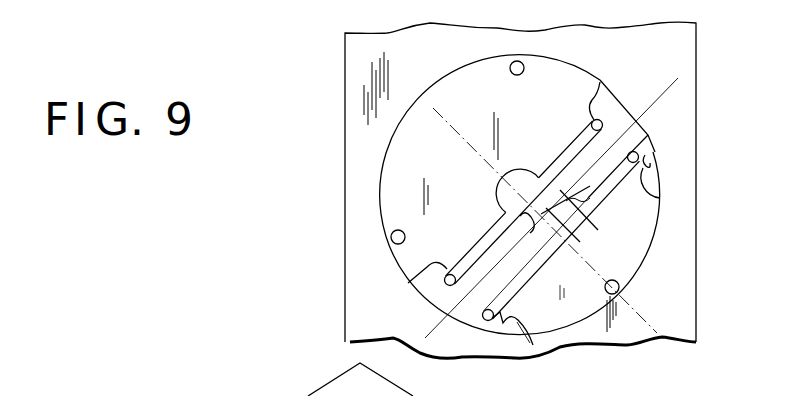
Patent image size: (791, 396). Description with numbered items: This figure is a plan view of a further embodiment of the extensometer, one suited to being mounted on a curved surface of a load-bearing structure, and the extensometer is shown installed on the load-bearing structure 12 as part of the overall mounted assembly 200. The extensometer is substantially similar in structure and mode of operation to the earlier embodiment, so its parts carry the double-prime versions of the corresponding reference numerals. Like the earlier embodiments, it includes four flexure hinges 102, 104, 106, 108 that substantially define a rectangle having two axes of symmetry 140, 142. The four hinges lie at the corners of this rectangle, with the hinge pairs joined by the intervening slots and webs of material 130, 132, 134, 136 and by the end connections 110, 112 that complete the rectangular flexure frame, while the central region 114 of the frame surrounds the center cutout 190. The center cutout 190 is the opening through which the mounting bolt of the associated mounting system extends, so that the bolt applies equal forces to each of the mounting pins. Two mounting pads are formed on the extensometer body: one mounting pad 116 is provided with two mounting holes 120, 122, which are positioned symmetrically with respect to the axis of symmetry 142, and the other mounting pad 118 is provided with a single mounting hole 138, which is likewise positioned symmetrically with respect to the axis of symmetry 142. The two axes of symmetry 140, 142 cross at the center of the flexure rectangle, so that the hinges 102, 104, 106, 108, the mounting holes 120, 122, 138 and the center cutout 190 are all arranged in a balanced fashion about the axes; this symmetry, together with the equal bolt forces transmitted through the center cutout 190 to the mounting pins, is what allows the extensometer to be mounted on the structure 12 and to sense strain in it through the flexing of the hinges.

The mounting plate 12 is at (345, 154).
The mounting pad 116 is at (437, 157).
The mounting pad 118 is at (580, 281).
The sensor assembly 200 is at (372, 278).
The flexure hinge 102 is at (590, 122).
The flexure hinge 104 is at (449, 274).
The flexure hinge 106 is at (658, 199).
The flexure hinge 108 is at (532, 344).
The hole 110 is at (630, 148).
The hole 112 is at (473, 320).
The center region 114 is at (512, 199).
The mounting hole 120 is at (510, 65).
The mounting hole 122 is at (390, 237).
The key end 130 is at (440, 306).
The slot edge 132 is at (585, 190).
The tongue end 134 is at (530, 318).
The rounded head 136 is at (568, 236).
The mounting hole 138 is at (619, 287).
The axis of symmetry 140 is at (655, 100).
The axis of symmetry 142 is at (638, 315).
The center cutout 190 is at (519, 169).